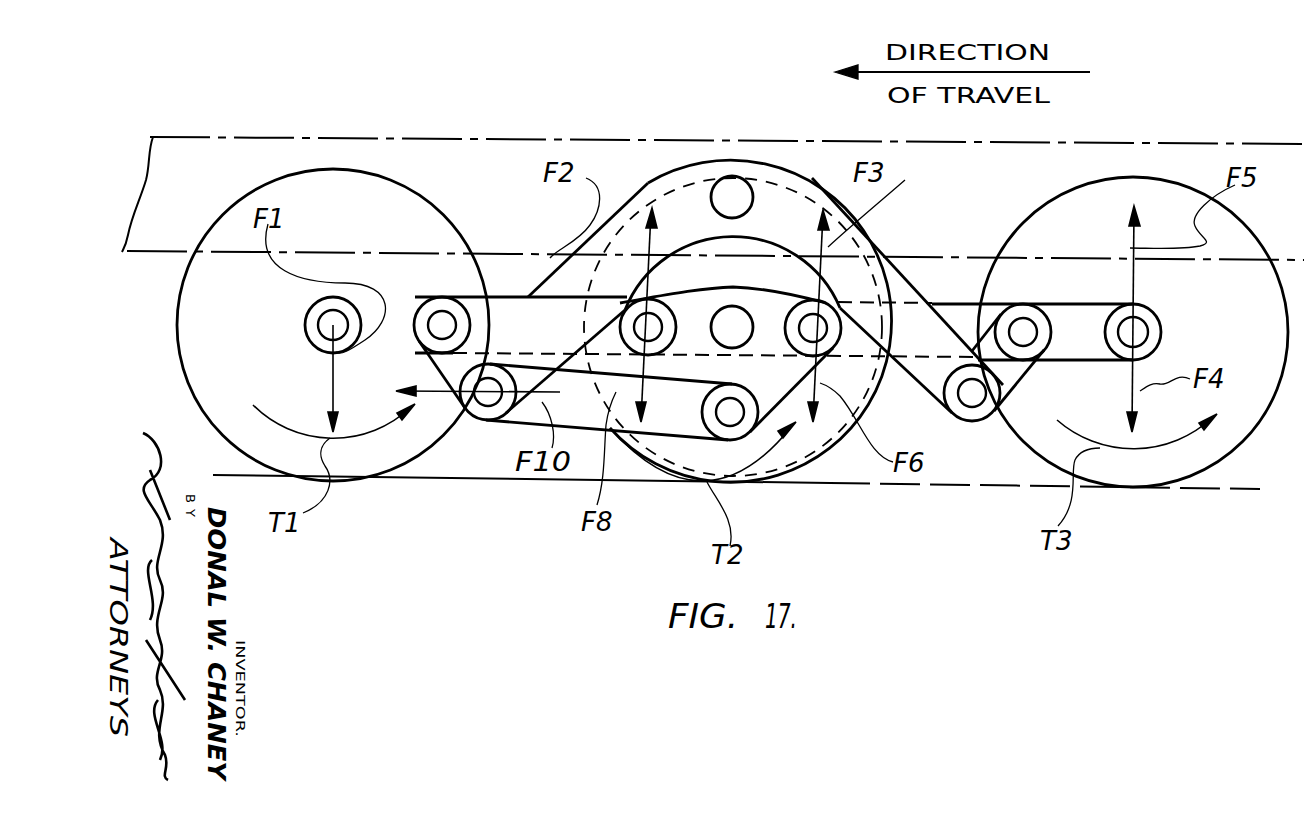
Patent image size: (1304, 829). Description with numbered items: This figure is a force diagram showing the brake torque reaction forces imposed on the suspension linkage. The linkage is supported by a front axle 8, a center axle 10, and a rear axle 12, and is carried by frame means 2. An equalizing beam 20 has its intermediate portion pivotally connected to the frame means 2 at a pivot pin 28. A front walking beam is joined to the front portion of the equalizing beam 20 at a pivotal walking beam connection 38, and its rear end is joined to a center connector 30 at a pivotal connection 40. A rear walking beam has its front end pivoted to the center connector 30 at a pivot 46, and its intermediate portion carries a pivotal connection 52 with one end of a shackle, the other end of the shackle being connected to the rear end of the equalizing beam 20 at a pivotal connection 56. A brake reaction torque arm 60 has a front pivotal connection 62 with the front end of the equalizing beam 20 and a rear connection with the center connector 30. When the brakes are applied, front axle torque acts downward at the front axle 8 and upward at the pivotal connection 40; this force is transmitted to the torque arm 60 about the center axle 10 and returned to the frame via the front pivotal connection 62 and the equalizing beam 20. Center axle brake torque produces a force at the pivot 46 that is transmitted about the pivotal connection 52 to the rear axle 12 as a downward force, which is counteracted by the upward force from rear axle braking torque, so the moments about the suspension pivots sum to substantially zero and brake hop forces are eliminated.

The frame means 2 is at (445, 140).
The front axle 8 is at (320, 326).
The center axle 10 is at (745, 338).
The rear axle 12 is at (1138, 331).
The equalizing beam 20 is at (646, 158).
The pivot pin 28 is at (728, 195).
The center connector 30 is at (785, 370).
The pivotal walking beam connection 38 is at (443, 322).
The pivotal connection 40 is at (632, 315).
The pivot 46 is at (823, 327).
The pivotal connection 52 is at (1023, 330).
The pivotal connection 56 is at (972, 393).
The brake reaction torque arm 60 is at (530, 408).
The front pivotal connection 62 is at (470, 400).